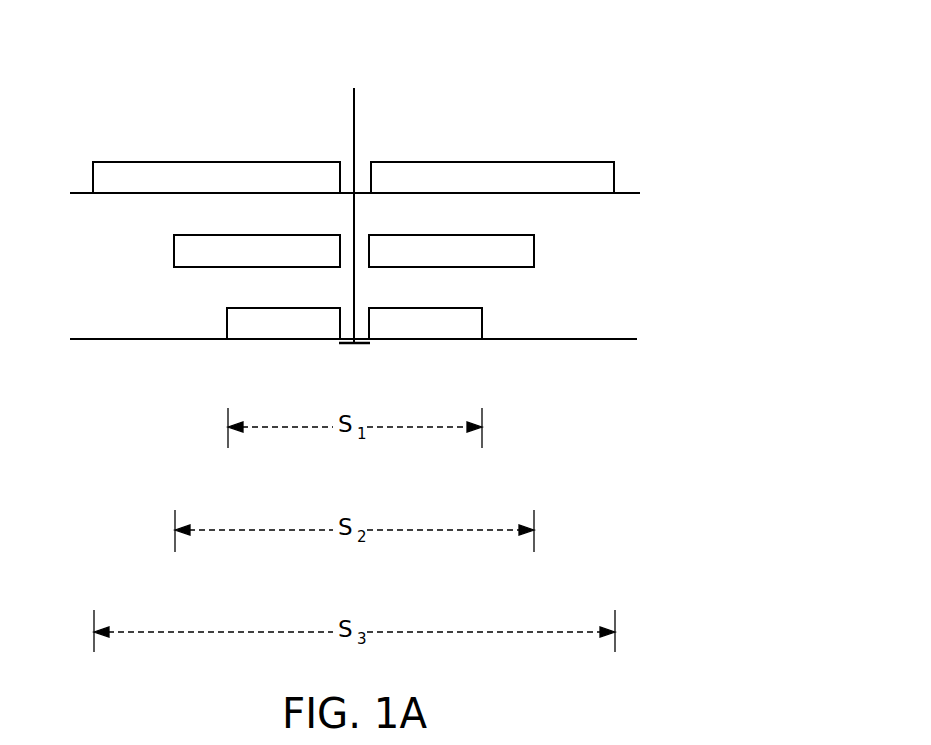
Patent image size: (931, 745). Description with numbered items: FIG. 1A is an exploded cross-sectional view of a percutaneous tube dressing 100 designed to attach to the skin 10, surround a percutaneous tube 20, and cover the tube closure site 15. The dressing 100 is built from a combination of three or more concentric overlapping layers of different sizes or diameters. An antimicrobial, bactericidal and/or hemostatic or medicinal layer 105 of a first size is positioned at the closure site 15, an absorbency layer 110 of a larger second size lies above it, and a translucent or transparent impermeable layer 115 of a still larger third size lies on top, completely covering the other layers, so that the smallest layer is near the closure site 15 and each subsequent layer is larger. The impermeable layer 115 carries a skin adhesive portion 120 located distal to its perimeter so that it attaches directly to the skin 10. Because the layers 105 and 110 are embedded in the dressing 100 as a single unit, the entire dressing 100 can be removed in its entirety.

The percutaneous tube dressing 100 is at (713, 132).
The skin 10 is at (673, 351).
The tube closure site 15 is at (355, 360).
The percutaneous tube 20 is at (353, 197).
The antimicrobial, bactericidal and/or hemostatic or medicinal layer 105 is at (478, 327).
The absorbency layer 110 is at (527, 257).
The translucent or transparent impermeable layer 115 is at (545, 172).
The adhesive portion 120 is at (686, 206).